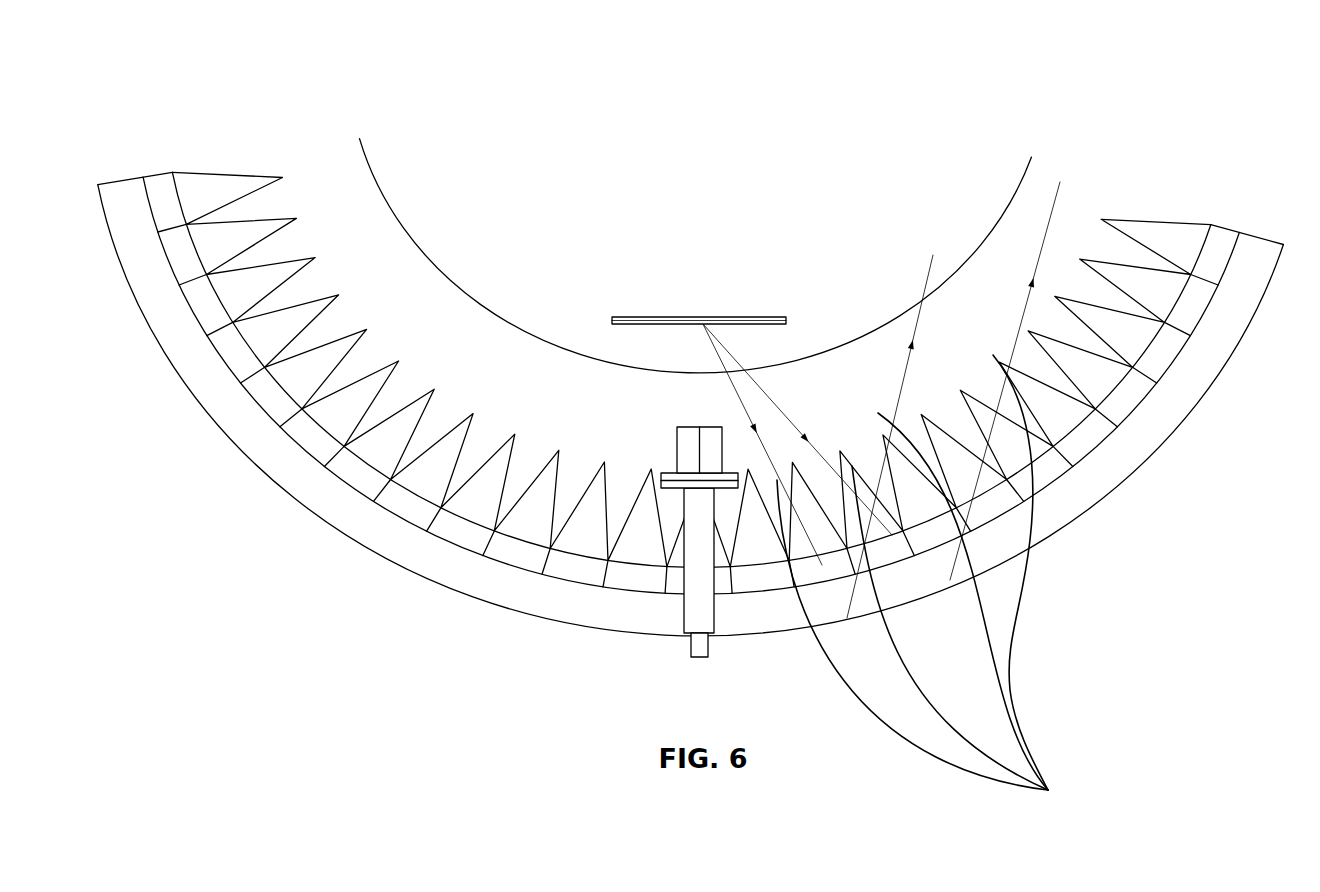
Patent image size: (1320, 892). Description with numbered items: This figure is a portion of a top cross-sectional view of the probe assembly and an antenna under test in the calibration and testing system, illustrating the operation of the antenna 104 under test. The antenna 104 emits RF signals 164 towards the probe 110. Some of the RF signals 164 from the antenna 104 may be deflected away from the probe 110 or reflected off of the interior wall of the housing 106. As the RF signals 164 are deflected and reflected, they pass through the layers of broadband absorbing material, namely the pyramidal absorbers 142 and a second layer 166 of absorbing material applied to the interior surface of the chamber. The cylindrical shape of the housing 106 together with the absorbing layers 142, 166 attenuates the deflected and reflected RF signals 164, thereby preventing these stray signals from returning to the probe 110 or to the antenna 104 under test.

The antenna under test 104 is at (736, 310).
The housing 106 is at (245, 460).
The probe 110 is at (690, 537).
The pyramidal absorbers 142 is at (195, 179).
The RF signals 164 is at (936, 579).
The second layer of absorbing material 166 is at (160, 193).